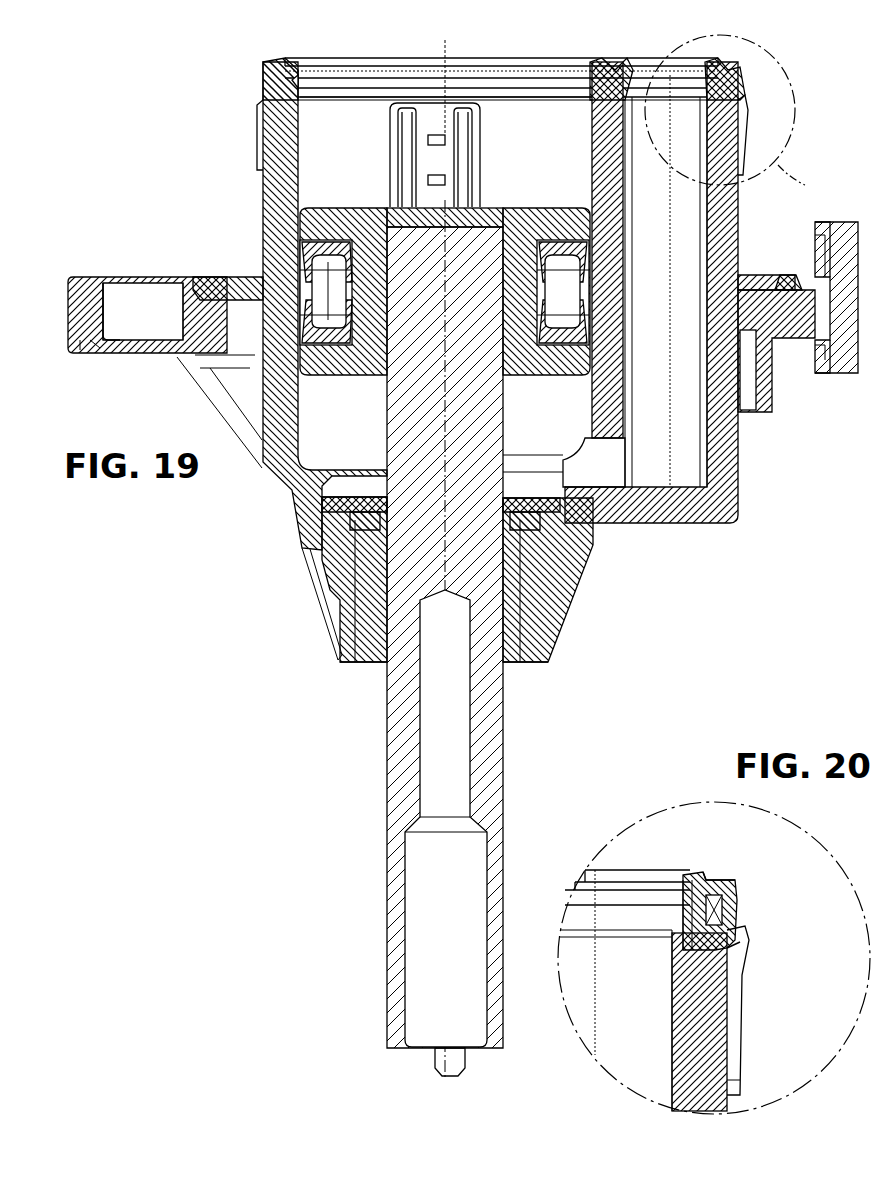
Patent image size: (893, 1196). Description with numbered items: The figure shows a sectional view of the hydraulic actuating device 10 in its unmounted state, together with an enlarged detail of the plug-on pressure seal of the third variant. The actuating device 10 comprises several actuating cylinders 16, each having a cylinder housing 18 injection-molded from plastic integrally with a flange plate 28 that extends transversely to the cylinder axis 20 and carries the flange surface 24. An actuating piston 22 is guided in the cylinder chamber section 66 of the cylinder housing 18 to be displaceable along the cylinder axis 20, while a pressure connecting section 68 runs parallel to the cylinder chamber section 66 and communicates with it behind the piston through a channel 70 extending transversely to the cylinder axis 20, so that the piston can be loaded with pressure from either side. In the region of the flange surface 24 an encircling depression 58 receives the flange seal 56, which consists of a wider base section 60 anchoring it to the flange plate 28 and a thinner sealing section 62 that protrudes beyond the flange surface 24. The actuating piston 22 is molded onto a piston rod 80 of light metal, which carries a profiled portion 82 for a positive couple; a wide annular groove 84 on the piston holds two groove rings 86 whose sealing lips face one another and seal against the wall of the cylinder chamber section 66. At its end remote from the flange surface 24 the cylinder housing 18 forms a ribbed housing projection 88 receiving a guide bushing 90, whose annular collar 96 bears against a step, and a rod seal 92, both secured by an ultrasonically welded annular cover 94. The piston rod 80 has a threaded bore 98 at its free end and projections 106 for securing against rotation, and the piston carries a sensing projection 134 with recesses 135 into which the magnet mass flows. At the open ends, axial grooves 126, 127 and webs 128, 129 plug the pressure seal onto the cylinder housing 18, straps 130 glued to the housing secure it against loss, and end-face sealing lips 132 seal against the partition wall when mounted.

In FIG. 19, the hydraulic actuating device 10 is at (243, 250).
In FIG. 20, the hydraulic actuating device 10 is at (700, 1127).
In FIG. 19, the actuating cylinder 16 is at (262, 496).
In FIG. 19, the cylinder housing 18 is at (770, 467).
In FIG. 20, the cylinder housing 18 is at (672, 1042).
In FIG. 19, the cylinder axis 20 is at (450, 76).
In FIG. 19, the actuating piston 22 is at (326, 262).
In FIG. 19, the flange surface 24 is at (147, 308).
In FIG. 19, the flange plate 28 is at (770, 342).
In FIG. 19, the flange seal 56 is at (738, 272).
In FIG. 19, the depression 58 is at (235, 278).
In FIG. 19, the base section 60 is at (712, 324).
In FIG. 19, the sealing section 62 is at (795, 272).
In FIG. 19, the cylinder chamber section 66 is at (552, 156).
In FIG. 19, the pressure connecting section 68 is at (682, 249).
In FIG. 20, the pressure connecting section 68 is at (634, 982).
In FIG. 19, the channel 70 is at (614, 478).
In FIG. 19, the piston rod 80 is at (382, 774).
In FIG. 19, the profiled portion 82 is at (512, 242).
In FIG. 19, the annular groove 84 is at (562, 290).
In FIG. 19, the groove ring 86 is at (330, 245).
In FIG. 19, the housing projection 88 is at (560, 607).
In FIG. 19, the guide bushing 90 is at (510, 670).
In FIG. 19, the rod seal 92 is at (365, 512).
In FIG. 19, the annular cover 94 is at (340, 496).
In FIG. 19, the annular collar 96 is at (325, 570).
In FIG. 19, the threaded bore 98 is at (462, 874).
In FIG. 19, the projection 106 is at (452, 1066).
In FIG. 20, the axial groove 126 is at (683, 921).
In FIG. 20, the axial groove 127 is at (722, 912).
In FIG. 20, the web 128 is at (712, 877).
In FIG. 20, the web 129 is at (740, 946).
In FIG. 19, the strap 130 is at (257, 152).
In FIG. 20, the strap 130 is at (732, 1064).
In FIG. 19, the sealing lip 132 is at (280, 60).
In FIG. 20, the sealing lip 132 is at (735, 864).
In FIG. 19, the sensing projection 134 is at (398, 142).
In FIG. 19, the recess 135 is at (445, 178).